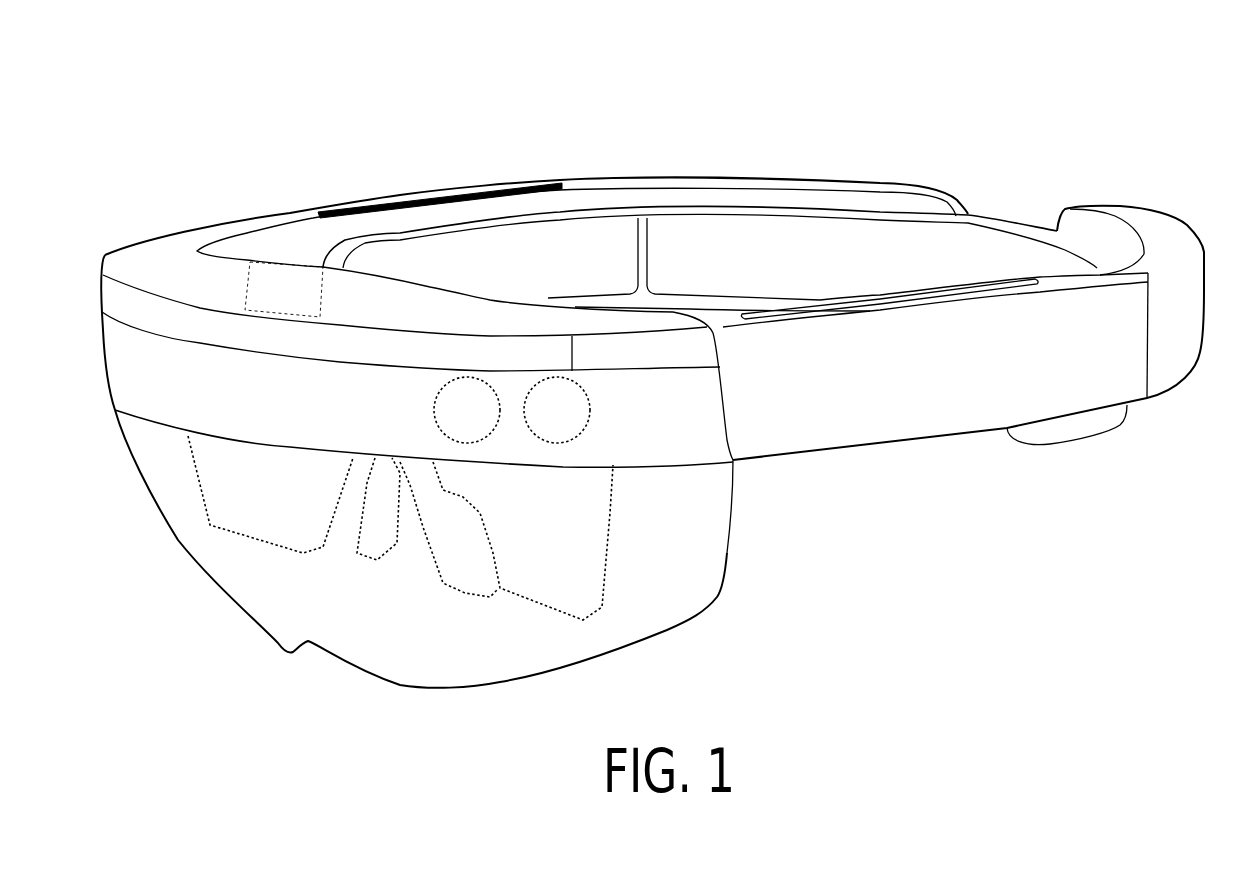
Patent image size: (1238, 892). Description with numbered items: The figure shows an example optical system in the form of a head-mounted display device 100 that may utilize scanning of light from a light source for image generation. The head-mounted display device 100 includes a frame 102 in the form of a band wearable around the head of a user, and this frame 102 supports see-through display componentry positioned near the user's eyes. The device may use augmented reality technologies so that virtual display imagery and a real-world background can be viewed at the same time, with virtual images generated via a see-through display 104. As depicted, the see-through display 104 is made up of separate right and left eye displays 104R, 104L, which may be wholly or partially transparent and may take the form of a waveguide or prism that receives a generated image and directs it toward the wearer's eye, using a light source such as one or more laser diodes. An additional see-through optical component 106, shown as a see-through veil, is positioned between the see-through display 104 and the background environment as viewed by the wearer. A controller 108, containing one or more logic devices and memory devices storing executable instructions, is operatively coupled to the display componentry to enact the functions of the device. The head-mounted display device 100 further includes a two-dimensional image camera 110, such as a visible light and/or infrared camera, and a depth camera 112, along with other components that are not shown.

The head-mounted display device 100 is at (1100, 124).
The frame 102 is at (983, 379).
The see-through display 104 is at (610, 513).
The right eye display 104R is at (313, 531).
The left eye display 104L is at (578, 599).
The see-through optical component 106 is at (721, 588).
The controller 108 is at (302, 299).
The two-dimensional image camera 110 is at (483, 422).
The depth camera 112 is at (573, 422).